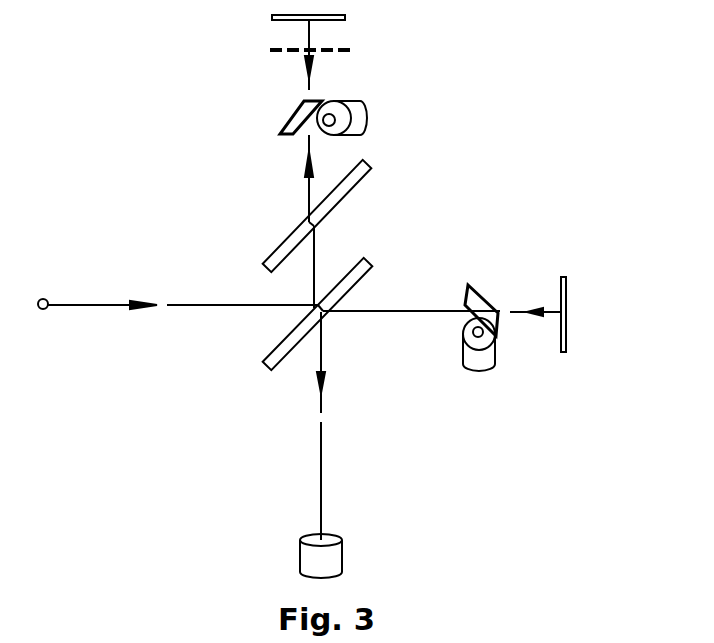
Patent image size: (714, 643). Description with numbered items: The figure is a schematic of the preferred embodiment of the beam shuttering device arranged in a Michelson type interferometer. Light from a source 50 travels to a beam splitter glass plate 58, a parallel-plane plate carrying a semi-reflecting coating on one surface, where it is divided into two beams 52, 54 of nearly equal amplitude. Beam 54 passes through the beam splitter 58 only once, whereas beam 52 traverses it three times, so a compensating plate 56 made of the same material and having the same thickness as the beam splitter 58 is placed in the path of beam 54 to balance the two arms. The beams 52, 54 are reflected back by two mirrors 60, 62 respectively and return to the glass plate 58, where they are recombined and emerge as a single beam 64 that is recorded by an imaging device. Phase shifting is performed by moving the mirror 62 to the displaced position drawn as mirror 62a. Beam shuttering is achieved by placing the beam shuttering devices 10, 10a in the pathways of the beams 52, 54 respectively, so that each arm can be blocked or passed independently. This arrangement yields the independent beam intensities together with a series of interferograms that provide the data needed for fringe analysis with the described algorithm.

The beam shuttering device 10 is at (481, 372).
The beam shuttering device 10a is at (300, 114).
The source 50 is at (43, 309).
The beam 52 is at (430, 311).
The beam 54 is at (309, 191).
The compensating plate 56 is at (367, 184).
The beam splitter glass plate 58 is at (262, 368).
The mirror 60 is at (566, 287).
The mirror 62 is at (345, 18).
The mirror position 62a is at (350, 50).
The beam 64 is at (321, 491).